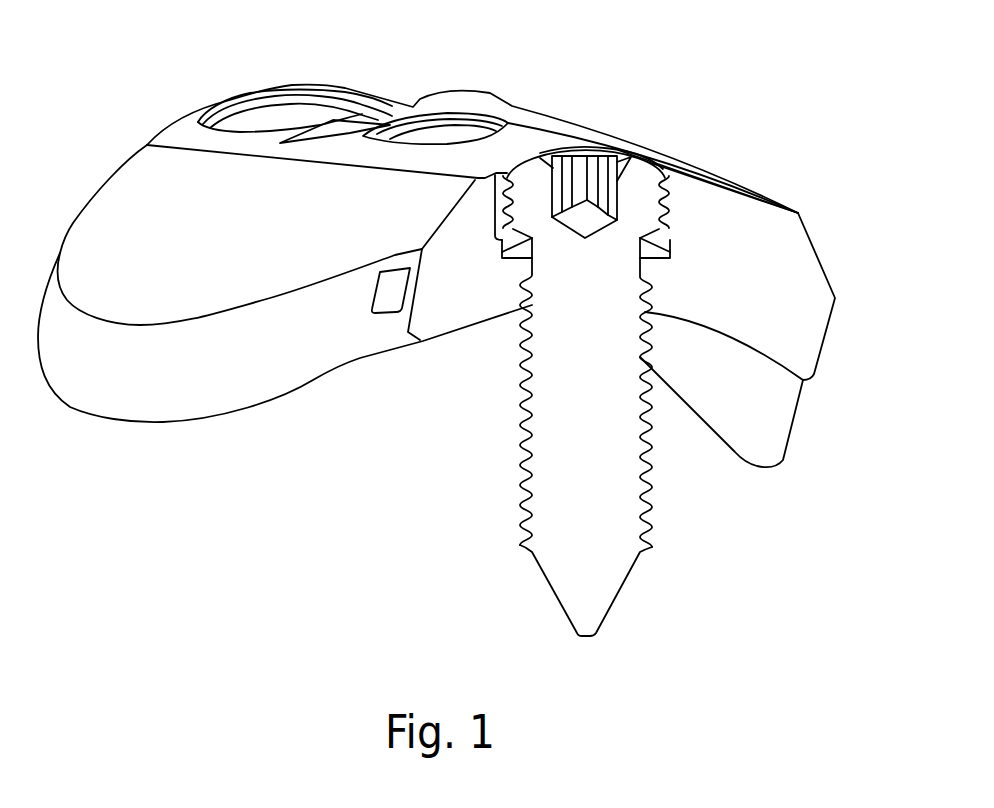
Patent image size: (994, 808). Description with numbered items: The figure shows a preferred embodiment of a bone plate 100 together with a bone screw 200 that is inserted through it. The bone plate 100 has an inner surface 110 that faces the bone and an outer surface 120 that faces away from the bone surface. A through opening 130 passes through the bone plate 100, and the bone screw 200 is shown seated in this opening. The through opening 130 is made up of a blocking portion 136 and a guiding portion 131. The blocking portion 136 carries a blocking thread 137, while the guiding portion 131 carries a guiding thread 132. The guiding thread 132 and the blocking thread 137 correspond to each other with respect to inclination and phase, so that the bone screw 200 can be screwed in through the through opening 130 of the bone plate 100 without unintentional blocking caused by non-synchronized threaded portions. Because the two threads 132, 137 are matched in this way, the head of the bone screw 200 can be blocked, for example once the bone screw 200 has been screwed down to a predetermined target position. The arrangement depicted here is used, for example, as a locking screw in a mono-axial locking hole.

The bone plate 100 is at (775, 190).
The inner surface 110 is at (313, 380).
The outer surface 120 is at (110, 203).
The through opening 130 is at (243, 110).
The guiding portion 131 is at (508, 258).
The guiding thread 132 is at (652, 288).
The blocking portion 136 is at (493, 213).
The blocking thread 137 is at (663, 208).
The bone screw 200 is at (495, 494).